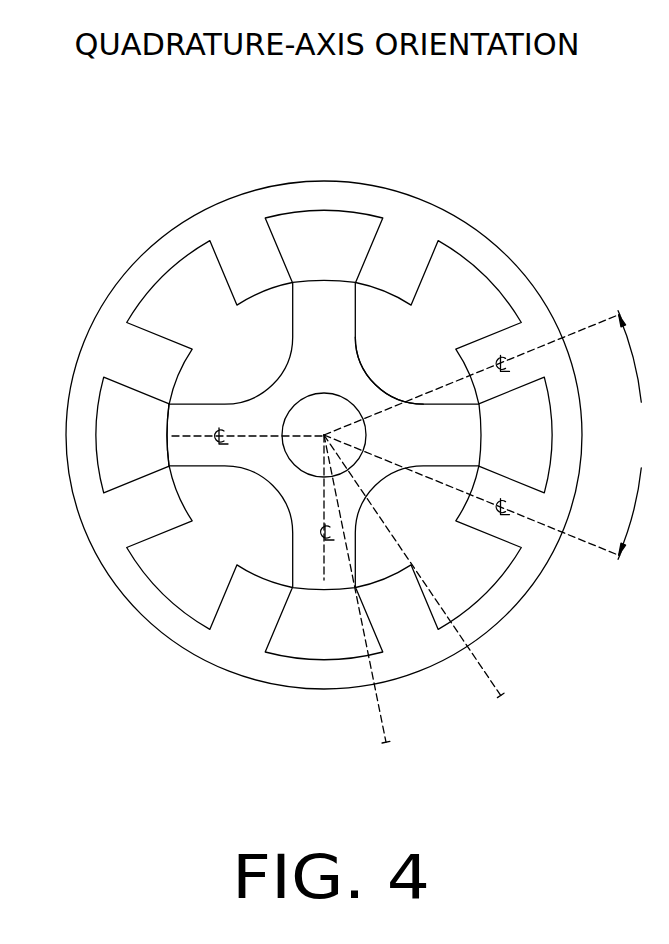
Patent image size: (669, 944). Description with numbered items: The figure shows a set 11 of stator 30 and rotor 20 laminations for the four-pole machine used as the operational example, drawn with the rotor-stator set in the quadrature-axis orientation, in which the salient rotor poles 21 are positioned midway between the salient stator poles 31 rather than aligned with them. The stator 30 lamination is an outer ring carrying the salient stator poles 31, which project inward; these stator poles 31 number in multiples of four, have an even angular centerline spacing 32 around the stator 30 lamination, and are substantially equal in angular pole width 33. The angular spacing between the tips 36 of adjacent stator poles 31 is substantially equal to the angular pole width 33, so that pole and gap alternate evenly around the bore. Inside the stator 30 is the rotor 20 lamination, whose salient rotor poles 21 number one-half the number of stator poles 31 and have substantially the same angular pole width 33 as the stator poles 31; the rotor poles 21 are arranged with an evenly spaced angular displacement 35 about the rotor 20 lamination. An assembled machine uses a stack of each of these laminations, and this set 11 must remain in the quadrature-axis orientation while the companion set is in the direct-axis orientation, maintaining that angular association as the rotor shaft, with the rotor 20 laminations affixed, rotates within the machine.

The set of stator and rotor laminations 11 is at (395, 381).
The rotor 20 is at (342, 362).
The salient rotor pole 21 is at (160, 417).
The stator 30 is at (120, 260).
The salient stator pole 31 is at (262, 261).
The angular centerline spacing 32 is at (493, 435).
The angular pole width 33 is at (490, 706).
The angular displacement 35 is at (313, 558).
The tip 36 is at (205, 346).